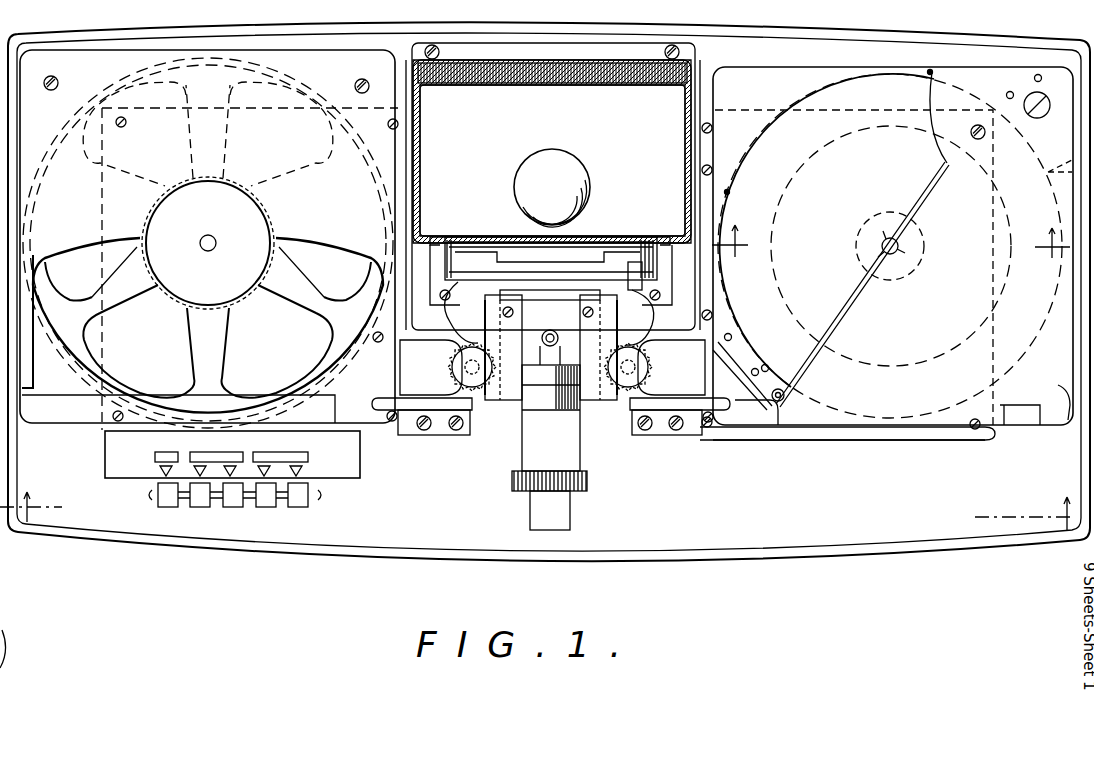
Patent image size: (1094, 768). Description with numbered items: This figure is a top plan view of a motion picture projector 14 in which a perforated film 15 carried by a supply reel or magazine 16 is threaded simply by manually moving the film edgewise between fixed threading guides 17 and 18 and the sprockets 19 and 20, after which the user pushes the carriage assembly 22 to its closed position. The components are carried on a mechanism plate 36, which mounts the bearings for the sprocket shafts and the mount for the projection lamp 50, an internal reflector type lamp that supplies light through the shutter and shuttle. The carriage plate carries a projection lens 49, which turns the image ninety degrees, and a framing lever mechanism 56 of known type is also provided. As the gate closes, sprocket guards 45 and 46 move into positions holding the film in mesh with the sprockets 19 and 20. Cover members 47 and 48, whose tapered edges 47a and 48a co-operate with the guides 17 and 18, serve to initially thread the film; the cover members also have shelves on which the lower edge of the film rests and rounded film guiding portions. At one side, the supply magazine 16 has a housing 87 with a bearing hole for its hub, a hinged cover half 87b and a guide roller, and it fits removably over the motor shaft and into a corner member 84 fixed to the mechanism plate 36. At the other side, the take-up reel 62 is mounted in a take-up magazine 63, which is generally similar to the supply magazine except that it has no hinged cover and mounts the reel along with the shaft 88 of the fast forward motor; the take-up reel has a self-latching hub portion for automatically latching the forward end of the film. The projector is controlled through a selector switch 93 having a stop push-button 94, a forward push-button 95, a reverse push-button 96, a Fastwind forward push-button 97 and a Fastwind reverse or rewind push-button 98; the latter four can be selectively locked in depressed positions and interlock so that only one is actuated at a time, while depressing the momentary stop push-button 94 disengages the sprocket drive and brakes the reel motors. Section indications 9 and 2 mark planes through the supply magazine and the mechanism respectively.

The motion picture projector 14 is at (947, 556).
The mechanism plate 36 is at (372, 530).
The take-up reel 62 is at (92, 367).
The take-up magazine 63 is at (33, 375).
The shaft of the fast forward motor 88 is at (216, 241).
The projection lamp 50 is at (572, 178).
The framing lever mechanism 56 is at (632, 262).
The carriage assembly 22 is at (504, 441).
The projection lens 49 is at (580, 462).
The sprocket guard 45 is at (486, 400).
The sprocket guard 46 is at (610, 398).
The sprocket 19 is at (464, 345).
The sprocket 20 is at (654, 352).
The cover member 47 is at (412, 352).
The tapered edge 47a is at (440, 402).
The threading guide 17 is at (414, 408).
The cover member 48 is at (688, 350).
The tapered edge 48a is at (680, 402).
The threading guide 18 is at (664, 408).
The housing 87 is at (758, 78).
The hinged cover half 87b is at (1068, 422).
The supply reel or magazine 16 is at (940, 432).
The corner member 84 is at (848, 432).
The perforated film 15 is at (752, 405).
The section line 9- 9 is at (891, 252).
The section line 2- 2 is at (537, 515).
The selector switch 93 is at (124, 494).
The stop push-button 94 is at (168, 507).
The forward push-button 95 is at (200, 507).
The reverse push-button 96 is at (233, 507).
The Fastwind forward push-button 97 is at (266, 507).
The Fastwind reverse or rewind push-button 98 is at (300, 507).